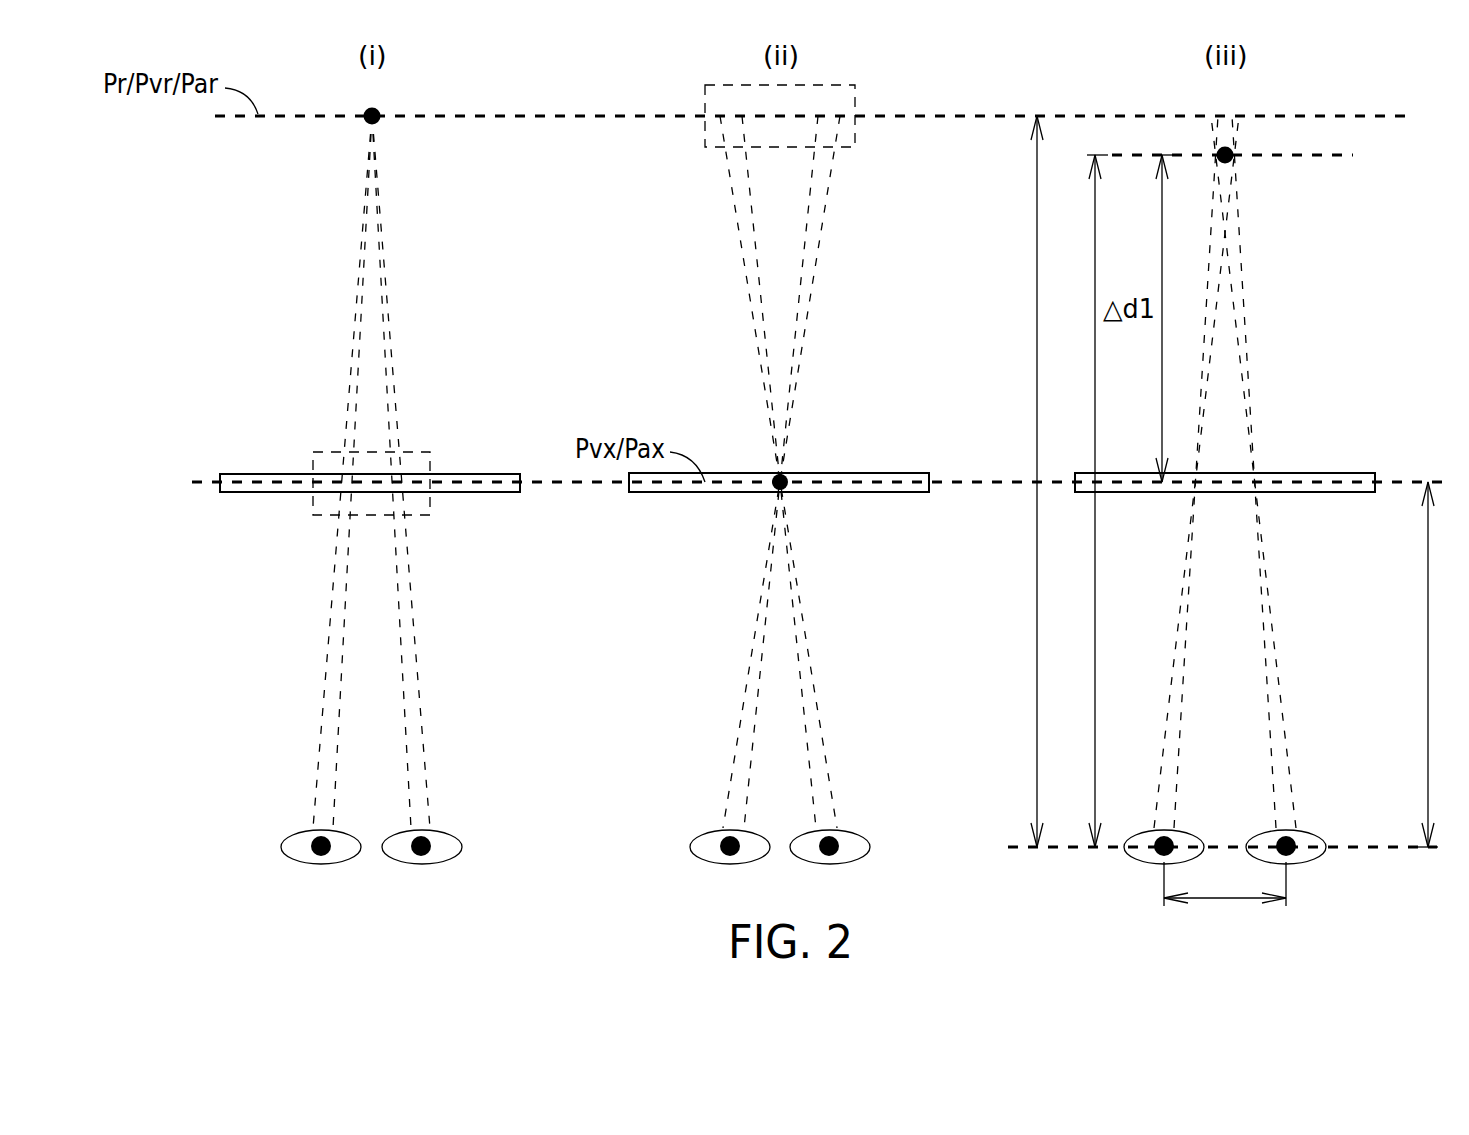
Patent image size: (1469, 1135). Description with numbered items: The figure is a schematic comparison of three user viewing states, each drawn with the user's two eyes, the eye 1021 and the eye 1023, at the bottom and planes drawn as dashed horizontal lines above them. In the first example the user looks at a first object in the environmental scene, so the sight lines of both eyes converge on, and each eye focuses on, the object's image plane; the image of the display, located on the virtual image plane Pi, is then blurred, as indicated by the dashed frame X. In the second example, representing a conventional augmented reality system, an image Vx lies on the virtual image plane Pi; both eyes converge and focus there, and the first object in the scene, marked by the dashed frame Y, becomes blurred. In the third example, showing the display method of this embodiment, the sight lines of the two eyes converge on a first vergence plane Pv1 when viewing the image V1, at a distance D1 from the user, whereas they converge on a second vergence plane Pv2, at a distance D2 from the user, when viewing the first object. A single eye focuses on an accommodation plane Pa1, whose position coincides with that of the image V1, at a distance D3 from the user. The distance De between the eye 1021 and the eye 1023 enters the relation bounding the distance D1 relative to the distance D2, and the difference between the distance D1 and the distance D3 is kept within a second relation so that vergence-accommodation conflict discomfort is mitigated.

The eye 1021 is at (293, 858).
The eye 1023 is at (448, 858).
The virtual image plane Pi is at (195, 480).
The dashed frame X is at (430, 452).
The dashed frame Y is at (855, 140).
The image Vx is at (877, 473).
The accommodation plane Pa1 is at (1320, 482).
The image V1 is at (1340, 492).
The vergence plane Pv1 is at (1348, 157).
The vergence plane Pv2 is at (1365, 116).
The distance D1 is at (1082, 501).
The distance D2 is at (1020, 481).
The distance D3 is at (1442, 664).
The distance between the two eyes De is at (1225, 900).